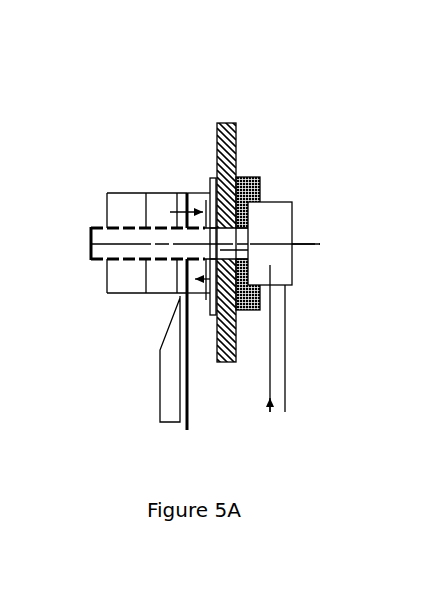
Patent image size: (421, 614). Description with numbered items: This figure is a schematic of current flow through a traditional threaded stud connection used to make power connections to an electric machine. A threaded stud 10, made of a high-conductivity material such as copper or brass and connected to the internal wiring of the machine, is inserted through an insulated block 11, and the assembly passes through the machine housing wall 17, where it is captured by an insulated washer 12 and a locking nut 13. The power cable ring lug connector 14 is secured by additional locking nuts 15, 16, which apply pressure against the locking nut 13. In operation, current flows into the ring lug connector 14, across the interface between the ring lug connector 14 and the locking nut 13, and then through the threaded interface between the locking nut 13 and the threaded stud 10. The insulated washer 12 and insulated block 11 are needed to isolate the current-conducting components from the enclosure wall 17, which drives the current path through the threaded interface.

The threaded stud 10 is at (296, 201).
The insulated block 11 is at (250, 177).
The insulated washer 12 is at (211, 177).
The locking nut 13 is at (193, 190).
The ring lug connector 14 is at (158, 370).
The locking nut 15 is at (157, 192).
The locking nut 16 is at (106, 193).
The machine housing wall 17 is at (224, 123).